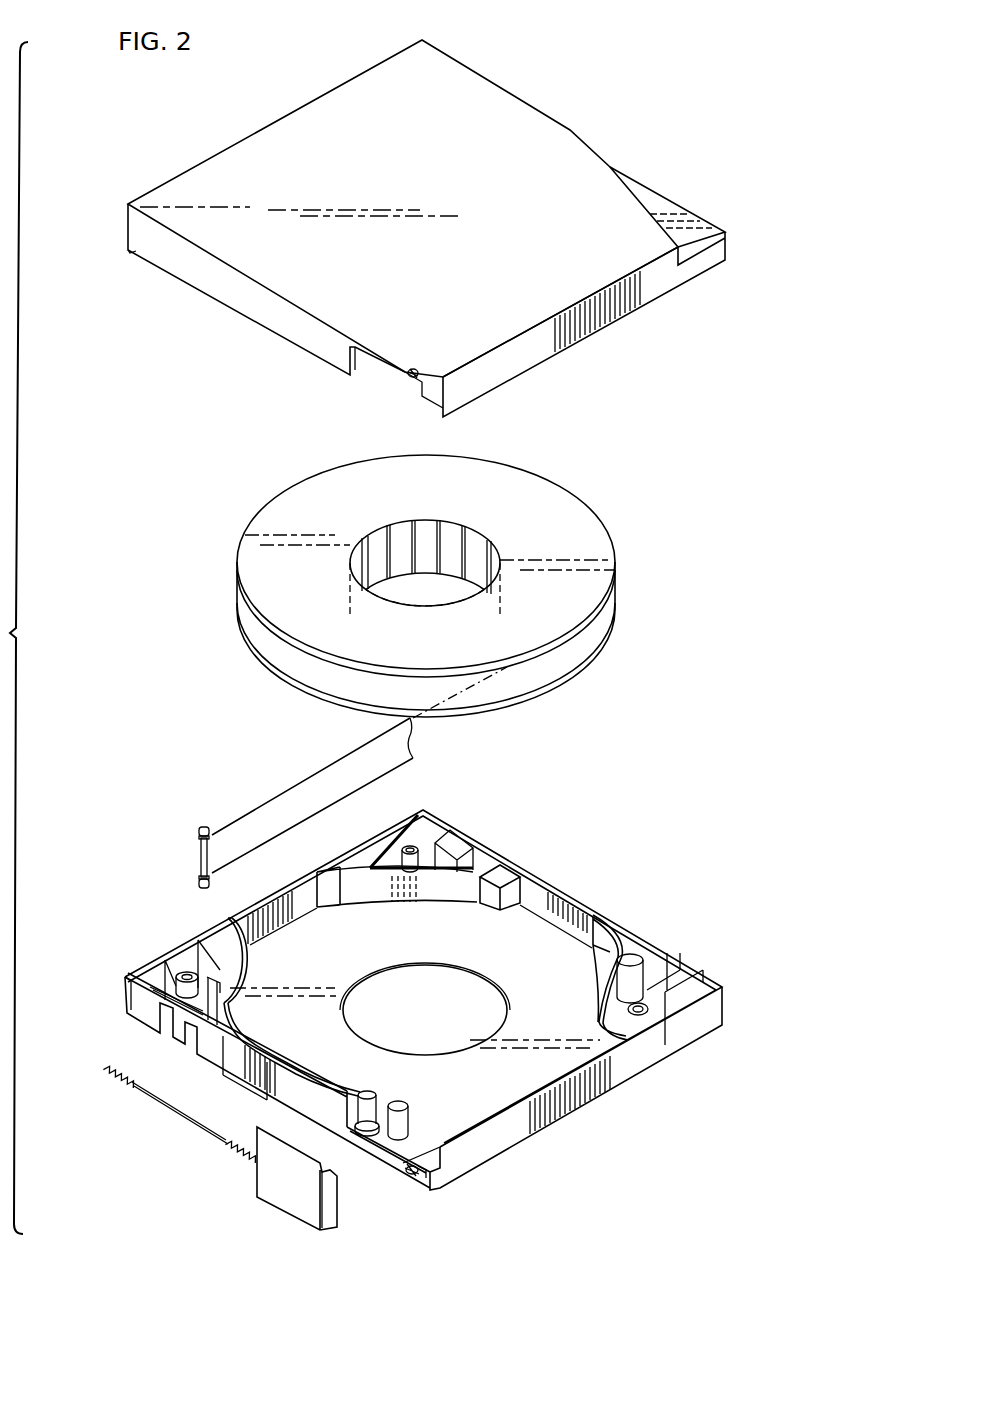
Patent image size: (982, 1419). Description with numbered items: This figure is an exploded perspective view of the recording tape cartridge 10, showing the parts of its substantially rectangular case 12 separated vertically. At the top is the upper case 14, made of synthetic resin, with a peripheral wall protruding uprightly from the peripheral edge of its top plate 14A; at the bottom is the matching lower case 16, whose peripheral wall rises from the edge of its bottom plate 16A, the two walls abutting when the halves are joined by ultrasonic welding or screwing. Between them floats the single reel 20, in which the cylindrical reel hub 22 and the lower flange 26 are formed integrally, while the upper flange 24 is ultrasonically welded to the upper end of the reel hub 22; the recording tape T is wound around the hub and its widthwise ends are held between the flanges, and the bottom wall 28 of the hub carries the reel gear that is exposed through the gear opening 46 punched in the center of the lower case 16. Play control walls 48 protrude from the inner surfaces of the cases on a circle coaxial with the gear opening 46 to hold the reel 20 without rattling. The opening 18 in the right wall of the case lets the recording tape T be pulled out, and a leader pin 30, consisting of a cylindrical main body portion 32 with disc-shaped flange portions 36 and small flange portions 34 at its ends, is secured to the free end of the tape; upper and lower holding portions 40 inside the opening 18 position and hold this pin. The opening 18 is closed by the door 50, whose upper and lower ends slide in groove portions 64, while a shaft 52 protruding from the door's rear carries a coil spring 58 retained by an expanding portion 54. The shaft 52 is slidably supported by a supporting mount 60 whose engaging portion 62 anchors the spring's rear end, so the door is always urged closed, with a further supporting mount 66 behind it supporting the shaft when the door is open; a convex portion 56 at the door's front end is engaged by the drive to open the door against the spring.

The recording tape cartridge 10 is at (667, 125).
The case 12 is at (421, 634).
The upper case 14 is at (672, 203).
The top plate 14A is at (290, 145).
The lower case 16 is at (727, 1003).
The bottom plate 16A is at (550, 950).
The opening 18 is at (357, 363).
The reel 20 is at (573, 479).
The reel hub 22 is at (452, 538).
The upper flange 24 is at (587, 535).
The lower flange 26 is at (600, 639).
The bottom wall 28 is at (408, 582).
The leader pin 30 is at (190, 862).
The main body portion 32 is at (200, 846).
The small flange portions 34 is at (200, 838).
The flange portions 36 is at (203, 828).
The holding portions 40 is at (412, 380).
The gear opening 46 is at (455, 972).
The play control walls 48 is at (450, 880).
The door 50 is at (280, 1185).
The shaft 52 is at (178, 1120).
The expanding portion 54 is at (108, 1067).
The convex portion 56 is at (333, 1210).
The coil spring 58 is at (235, 1160).
The supporting mount 60 is at (255, 1036).
The engaging portion 62 is at (195, 1040).
The groove portions 64 is at (402, 1158).
The supporting mount 66 is at (128, 996).
The recording tape T is at (330, 787).